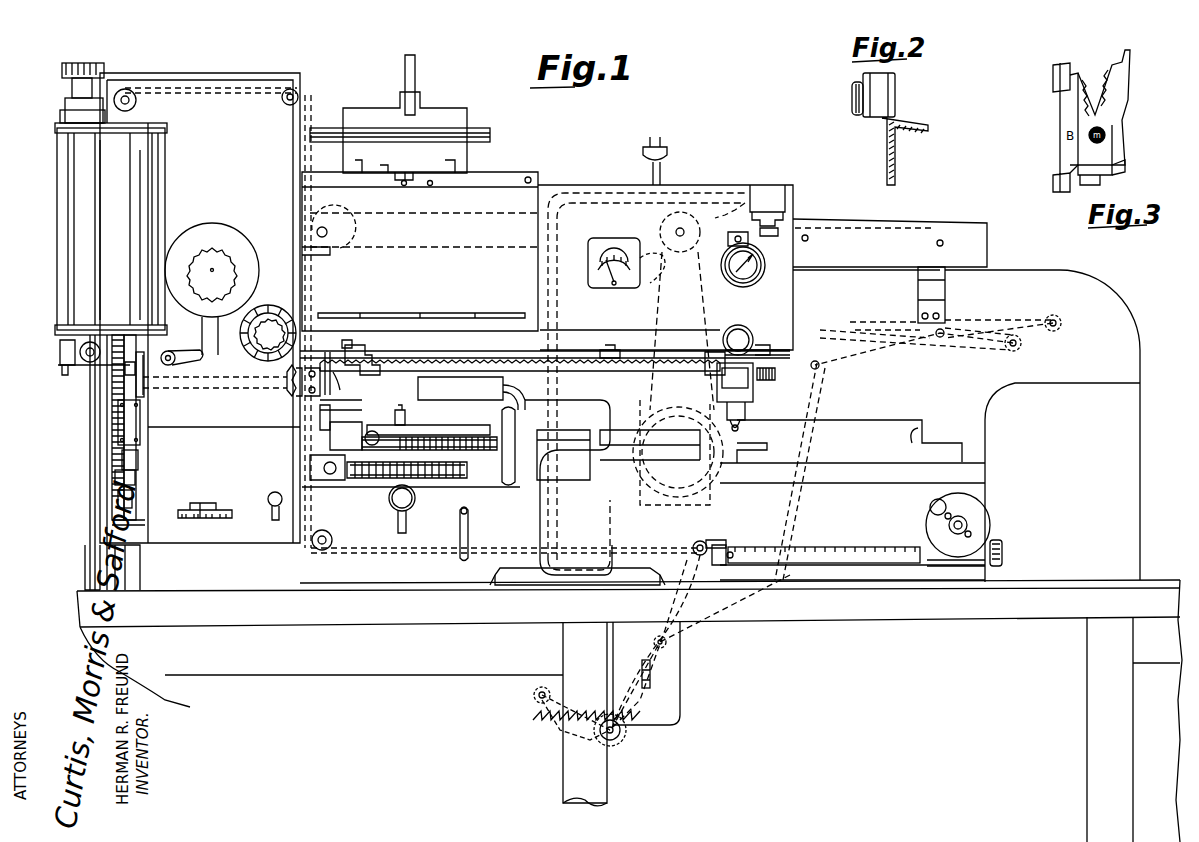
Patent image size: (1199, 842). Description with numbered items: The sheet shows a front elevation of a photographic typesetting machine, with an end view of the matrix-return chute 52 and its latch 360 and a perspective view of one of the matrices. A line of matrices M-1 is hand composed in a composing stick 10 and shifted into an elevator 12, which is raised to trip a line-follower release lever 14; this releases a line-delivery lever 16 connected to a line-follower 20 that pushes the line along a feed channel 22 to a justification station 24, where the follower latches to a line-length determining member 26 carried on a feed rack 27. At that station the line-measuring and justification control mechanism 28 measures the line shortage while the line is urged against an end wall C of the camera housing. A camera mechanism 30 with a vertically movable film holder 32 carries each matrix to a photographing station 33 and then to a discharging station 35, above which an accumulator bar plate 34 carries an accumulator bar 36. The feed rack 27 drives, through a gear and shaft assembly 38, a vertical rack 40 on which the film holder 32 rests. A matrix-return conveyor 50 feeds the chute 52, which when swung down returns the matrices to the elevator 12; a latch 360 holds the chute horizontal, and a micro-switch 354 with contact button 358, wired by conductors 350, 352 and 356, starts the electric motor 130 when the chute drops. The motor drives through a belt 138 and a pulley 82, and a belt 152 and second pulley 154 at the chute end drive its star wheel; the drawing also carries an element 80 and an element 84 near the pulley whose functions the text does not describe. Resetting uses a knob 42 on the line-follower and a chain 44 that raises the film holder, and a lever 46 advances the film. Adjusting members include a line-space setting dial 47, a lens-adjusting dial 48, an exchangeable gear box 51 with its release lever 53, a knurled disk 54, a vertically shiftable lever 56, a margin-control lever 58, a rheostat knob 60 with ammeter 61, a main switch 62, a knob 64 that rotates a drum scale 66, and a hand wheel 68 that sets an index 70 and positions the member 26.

In FIG. 1, the composing stick 10 is at (866, 431).
In FIG. 1, the elevator 12 is at (575, 470).
In FIG. 1, the line-follower release lever 14 is at (652, 366).
In FIG. 1, the line-delivery lever 16 is at (812, 393).
In FIG. 1, the line-follower 20 is at (753, 390).
In FIG. 1, the feed channel or track 22 is at (605, 352).
In FIG. 1, the justification station 24 is at (330, 366).
In FIG. 1, the line-length determining member 26 is at (375, 372).
In FIG. 1, the feed rack 27 is at (422, 362).
In FIG. 1, the line-measuring and justification control mechanism 28 is at (378, 499).
In FIG. 1, the camera mechanism 30 is at (240, 142).
In FIG. 1, the film holder 32 is at (115, 205).
In FIG. 1, the photographing station 33 is at (308, 280).
In FIG. 1, the accumulator bar plate 34 is at (448, 108).
In FIG. 1, the discharging station 35 is at (291, 194).
In FIG. 1, the accumulator bar 36 is at (482, 128).
In FIG. 1, the gear and shaft assembly 38 is at (135, 410).
In FIG. 1, the vertical rack 40 is at (112, 362).
In FIG. 1, the knob 42 is at (740, 328).
In FIG. 1, the chain 44 is at (262, 88).
In FIG. 1, the lever 46 is at (270, 500).
In FIG. 1, the line-space setting dial 47 is at (270, 315).
In FIG. 1, the lens-adjusting dial 48 is at (205, 250).
In FIG. 1, the matrix-return conveyor 50 is at (456, 213).
In FIG. 1, the gear box 51 is at (140, 442).
In FIG. 1, the matrix-return chute 52 is at (922, 236).
In FIG. 2, the matrix-return chute 52 is at (908, 94).
In FIG. 1, the release lever 53 is at (185, 352).
In FIG. 1, the knurled disk 54 is at (180, 510).
In FIG. 1, the vertically shiftable lever 56 is at (415, 500).
In FIG. 1, the margin-control lever 58 is at (460, 520).
In FIG. 1, the rheostat knob 60 is at (752, 272).
In FIG. 1, the ammeter 61 is at (588, 270).
In FIG. 1, the main switch 62 is at (650, 672).
In FIG. 1, the knob 64 is at (1004, 550).
In FIG. 1, the drum scale 66 is at (882, 552).
In FIG. 1, the hand wheel 68 is at (978, 520).
In FIG. 1, the index 70 is at (755, 530).
In FIG. 1, the cam 80 is at (338, 222).
In FIG. 1, the pulley 82 is at (660, 230).
In FIG. 1, the belt 84 is at (655, 272).
In FIG. 1, the electric motor 130 is at (590, 585).
In FIG. 1, the belt 138 is at (655, 290).
In FIG. 2, the belt 152 is at (852, 90).
In FIG. 2, the second pulley 154 is at (852, 100).
In FIG. 1, the conductor 350 is at (610, 174).
In FIG. 1, the conductor 352 is at (700, 175).
In FIG. 1, the micro-switch 354 is at (768, 200).
In FIG. 1, the conductor 356 is at (748, 176).
In FIG. 1, the contact button 358 is at (790, 218).
In FIG. 1, the latch 360 is at (947, 295).
In FIG. 2, the latch 360 is at (912, 118).
In FIG. 1, the end wall C is at (292, 362).
In FIG. 1, the line of matrices M-1 is at (690, 418).